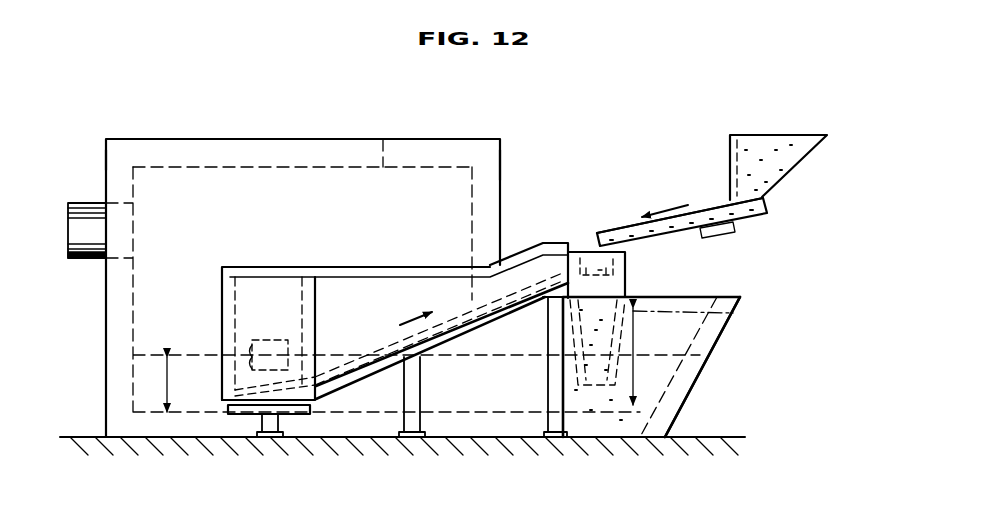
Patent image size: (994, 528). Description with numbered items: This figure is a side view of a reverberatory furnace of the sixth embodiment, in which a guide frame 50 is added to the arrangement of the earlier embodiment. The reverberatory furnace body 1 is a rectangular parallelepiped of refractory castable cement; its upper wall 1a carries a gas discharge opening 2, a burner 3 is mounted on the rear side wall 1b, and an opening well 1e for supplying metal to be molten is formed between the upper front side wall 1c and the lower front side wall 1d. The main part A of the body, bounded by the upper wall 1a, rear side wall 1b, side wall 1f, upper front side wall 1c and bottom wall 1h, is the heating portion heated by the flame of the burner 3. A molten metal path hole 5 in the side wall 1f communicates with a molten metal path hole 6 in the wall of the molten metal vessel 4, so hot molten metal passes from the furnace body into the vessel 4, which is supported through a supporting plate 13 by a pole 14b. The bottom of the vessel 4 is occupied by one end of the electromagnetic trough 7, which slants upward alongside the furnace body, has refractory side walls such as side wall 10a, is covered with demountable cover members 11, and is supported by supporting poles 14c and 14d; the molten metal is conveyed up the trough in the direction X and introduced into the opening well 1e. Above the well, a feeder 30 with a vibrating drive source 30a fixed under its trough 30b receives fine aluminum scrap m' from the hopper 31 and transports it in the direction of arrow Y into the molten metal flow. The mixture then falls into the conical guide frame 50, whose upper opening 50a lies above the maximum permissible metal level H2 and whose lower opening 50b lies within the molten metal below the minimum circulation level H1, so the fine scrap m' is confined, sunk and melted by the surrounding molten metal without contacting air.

The reverberatory furnace body 1 is at (504, 118).
The upper wall 1a is at (314, 138).
The rear side wall 1b is at (106, 157).
The upper front side wall 1c is at (502, 166).
The lower front side wall 1d is at (687, 377).
The opening well 1e is at (735, 314).
The side wall 1f is at (258, 178).
The bottom wall 1h is at (331, 422).
The gas discharge opening 2 is at (415, 150).
The burner 3 is at (88, 262).
The molten metal vessel 4 is at (219, 291).
The molten metal path hole 5 is at (250, 340).
The molten metal path hole 6 is at (217, 408).
The electromagnetic trough 7 is at (445, 347).
The side wall 10a is at (382, 293).
The cover members 11 is at (555, 244).
The supporting plate 13 is at (268, 417).
The pole 14b is at (272, 428).
The supporting pole 14c is at (412, 425).
The supporting pole 14d is at (553, 420).
The feeder 30 is at (613, 231).
The vibrating drive source 30a is at (734, 236).
The trough 30b is at (717, 210).
The hopper 31 is at (760, 140).
The guide frame 50 is at (575, 358).
The upper opening 50a is at (622, 296).
The lower opening 50b is at (595, 398).
The main part (heating portion) A is at (203, 225).
The fine aluminum scrap m' is at (774, 139).
The conveying direction X is at (399, 328).
The arrow (scrap transport direction) Y is at (670, 201).
The minimum level H1 is at (165, 384).
The maximum permissible level H2 is at (645, 356).